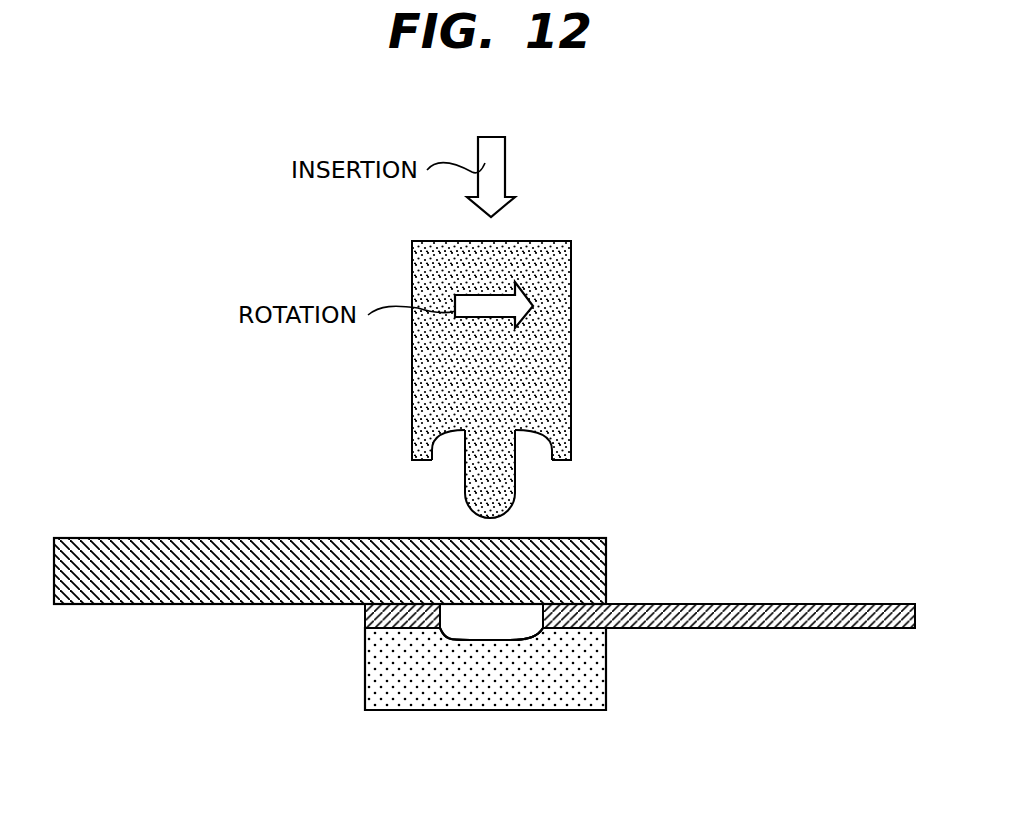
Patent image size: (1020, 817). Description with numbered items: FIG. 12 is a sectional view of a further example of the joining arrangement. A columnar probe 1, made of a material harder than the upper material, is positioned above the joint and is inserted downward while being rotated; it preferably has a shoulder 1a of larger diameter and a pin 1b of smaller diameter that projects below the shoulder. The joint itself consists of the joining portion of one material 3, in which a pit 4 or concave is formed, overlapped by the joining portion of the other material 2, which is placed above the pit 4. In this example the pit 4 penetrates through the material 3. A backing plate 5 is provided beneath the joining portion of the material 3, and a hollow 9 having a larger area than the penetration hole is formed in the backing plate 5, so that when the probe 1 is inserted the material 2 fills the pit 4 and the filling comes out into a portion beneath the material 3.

The probe 1 is at (537, 346).
The shoulder 1a is at (560, 437).
The pin 1b is at (507, 493).
The material 2 is at (120, 548).
The material 3 is at (802, 618).
The pit 4 is at (450, 613).
The backing plate 5 is at (520, 683).
The hollow 9 is at (523, 628).